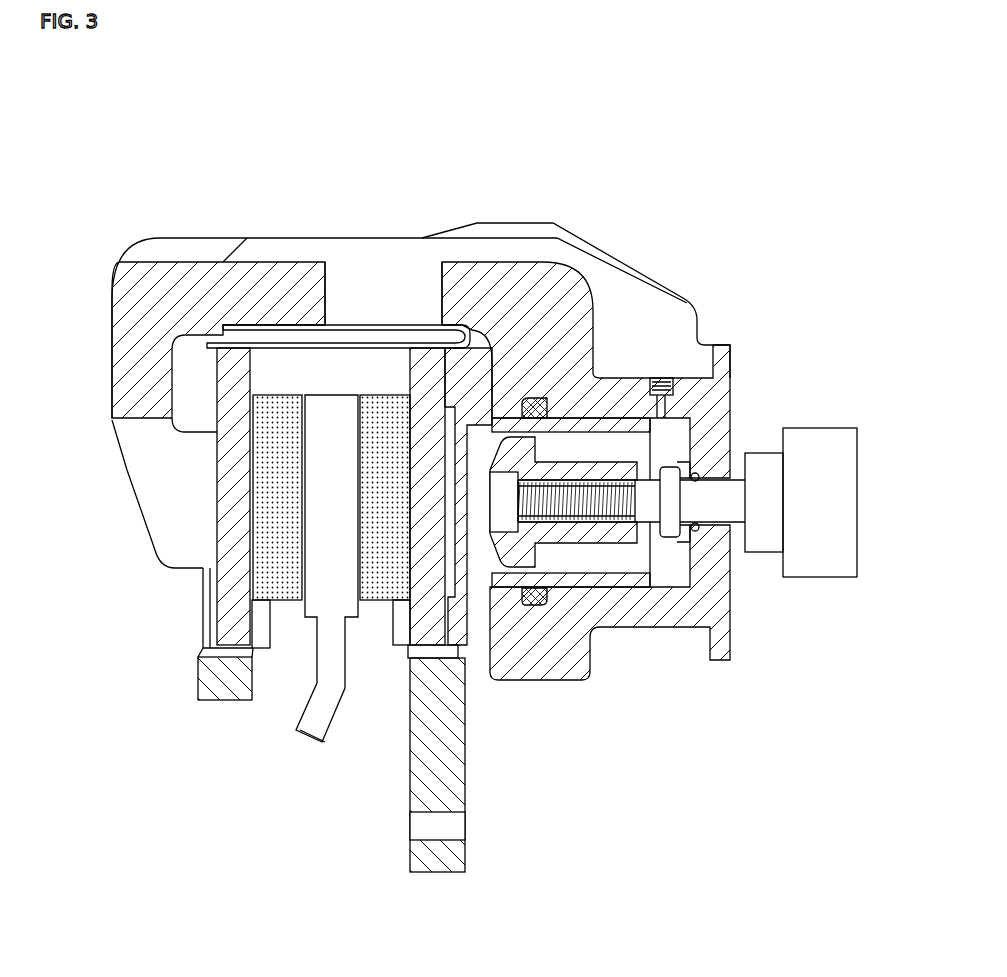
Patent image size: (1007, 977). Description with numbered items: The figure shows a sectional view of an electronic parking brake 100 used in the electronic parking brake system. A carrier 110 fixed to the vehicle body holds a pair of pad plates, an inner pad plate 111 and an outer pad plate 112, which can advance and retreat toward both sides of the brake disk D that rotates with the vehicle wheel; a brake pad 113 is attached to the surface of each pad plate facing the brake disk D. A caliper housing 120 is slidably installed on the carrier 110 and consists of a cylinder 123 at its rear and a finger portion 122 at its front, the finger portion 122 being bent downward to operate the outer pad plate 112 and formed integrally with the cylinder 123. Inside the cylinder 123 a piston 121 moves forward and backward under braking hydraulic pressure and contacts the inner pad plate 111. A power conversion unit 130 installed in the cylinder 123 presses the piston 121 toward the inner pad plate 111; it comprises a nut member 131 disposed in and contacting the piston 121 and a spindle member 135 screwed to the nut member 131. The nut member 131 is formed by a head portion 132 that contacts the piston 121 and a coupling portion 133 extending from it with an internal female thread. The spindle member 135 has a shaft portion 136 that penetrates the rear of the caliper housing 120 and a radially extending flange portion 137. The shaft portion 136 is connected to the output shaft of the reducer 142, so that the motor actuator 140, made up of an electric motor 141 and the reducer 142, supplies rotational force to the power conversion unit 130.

The electronic parking brake 100 is at (465, 120).
The carrier 110 is at (423, 790).
The inner pad plate 111 is at (412, 645).
The outer pad plate 112 is at (225, 598).
The brake pad 113 is at (285, 603).
The caliper housing 120 is at (310, 238).
The piston 121 is at (463, 585).
The finger portion 122 is at (140, 472).
The cylinder 123 is at (721, 347).
The power conversion unit 130 is at (604, 420).
The nut member 131 is at (597, 788).
The head portion 132 is at (515, 600).
The coupling portion 133 is at (587, 535).
The spindle member 135 is at (757, 753).
The shaft portion 136 is at (698, 510).
The flange portion 137 is at (663, 480).
The motor actuator 140 is at (748, 372).
The electric motor 141 is at (809, 432).
The reducer 142 is at (771, 457).
The brake disk D is at (330, 707).